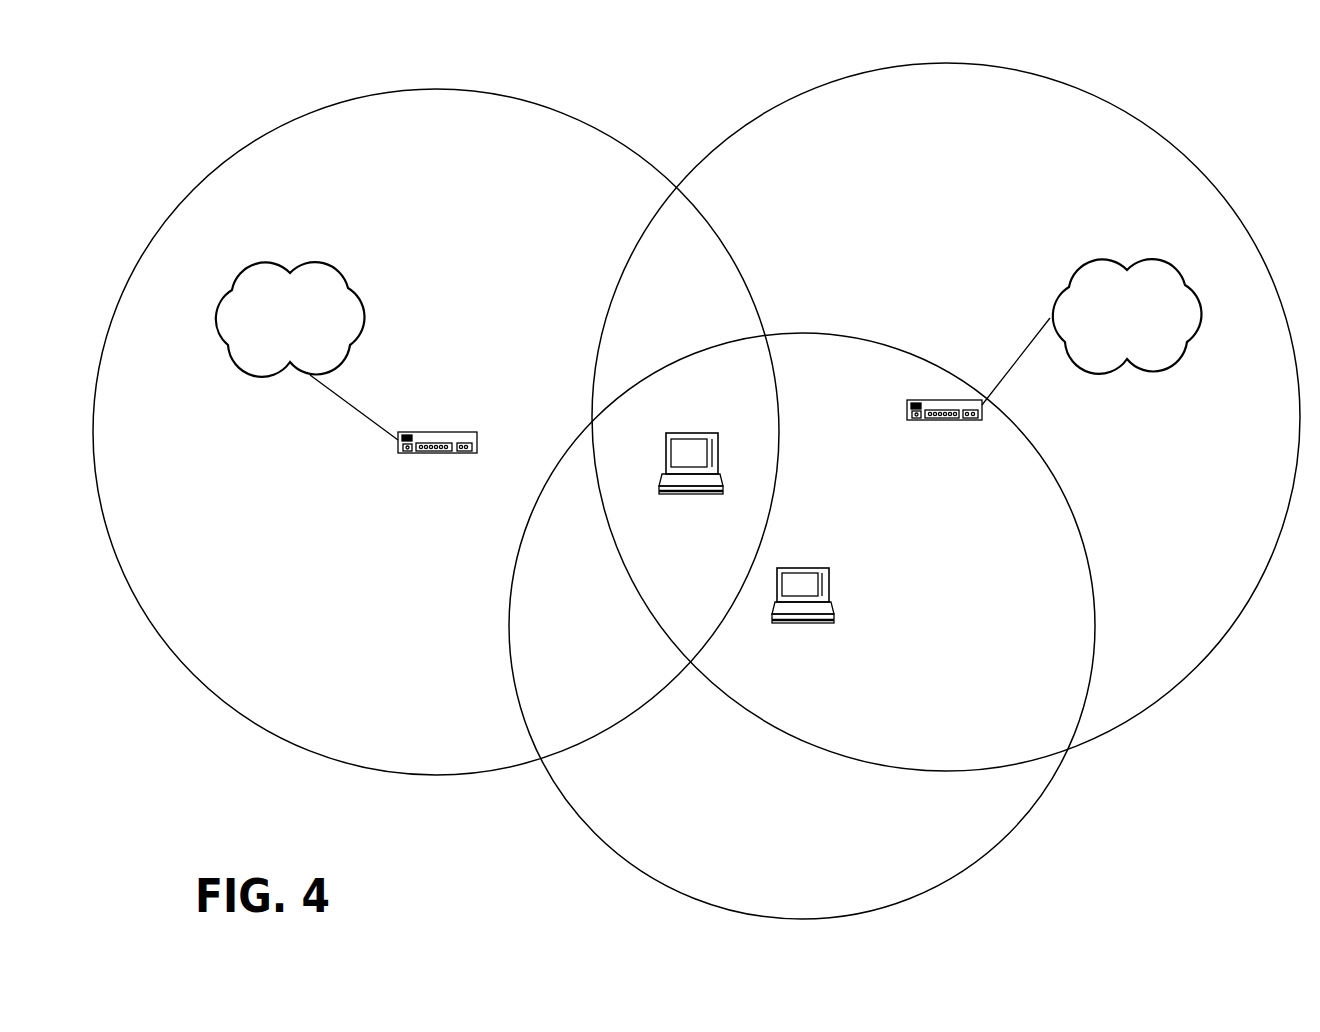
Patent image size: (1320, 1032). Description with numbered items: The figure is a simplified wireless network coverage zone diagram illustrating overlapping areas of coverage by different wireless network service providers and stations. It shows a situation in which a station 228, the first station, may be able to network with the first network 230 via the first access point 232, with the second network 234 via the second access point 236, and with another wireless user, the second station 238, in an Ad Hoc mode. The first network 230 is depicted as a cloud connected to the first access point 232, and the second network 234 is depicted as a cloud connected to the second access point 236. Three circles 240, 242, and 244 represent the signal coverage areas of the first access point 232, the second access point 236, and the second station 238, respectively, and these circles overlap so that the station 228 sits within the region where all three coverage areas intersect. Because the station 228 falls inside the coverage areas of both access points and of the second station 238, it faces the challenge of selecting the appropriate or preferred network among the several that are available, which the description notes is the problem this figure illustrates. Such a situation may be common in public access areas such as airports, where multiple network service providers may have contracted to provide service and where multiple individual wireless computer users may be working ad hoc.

The circle 240 is at (216, 170).
The circle 242 is at (908, 62).
The circle 244 is at (573, 447).
The network 1 230 is at (307, 262).
The network 2 234 is at (1105, 257).
The AP1 232 is at (460, 432).
The AP 2 236 is at (912, 400).
The station 228 is at (705, 434).
The STA 2 238 is at (801, 568).